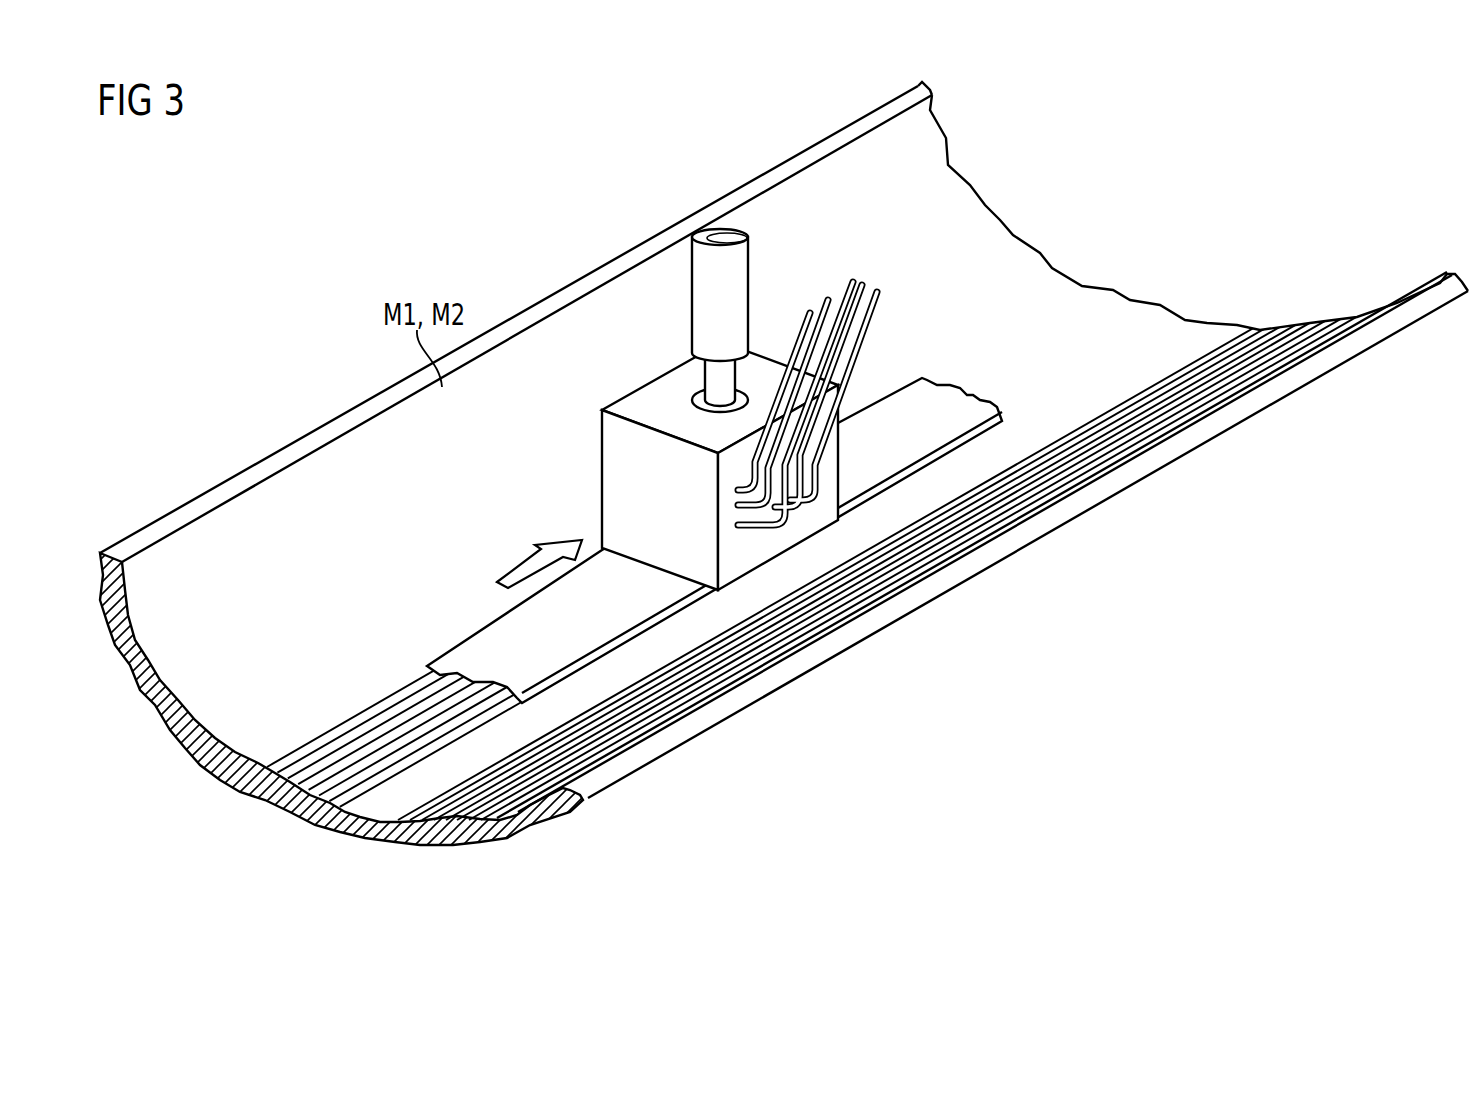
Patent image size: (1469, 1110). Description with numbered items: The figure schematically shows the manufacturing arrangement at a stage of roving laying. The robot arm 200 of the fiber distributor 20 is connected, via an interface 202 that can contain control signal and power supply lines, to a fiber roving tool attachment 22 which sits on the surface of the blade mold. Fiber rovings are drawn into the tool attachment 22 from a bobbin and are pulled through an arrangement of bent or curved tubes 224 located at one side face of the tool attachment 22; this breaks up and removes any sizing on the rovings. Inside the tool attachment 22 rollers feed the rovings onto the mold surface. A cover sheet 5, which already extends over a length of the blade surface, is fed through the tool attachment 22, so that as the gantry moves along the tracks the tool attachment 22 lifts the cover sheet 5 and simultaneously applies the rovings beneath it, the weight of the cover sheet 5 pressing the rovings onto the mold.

The cover sheet 5 is at (960, 400).
The fiber distributor 20 is at (769, 398).
The fiber roving tool attachment 22 is at (640, 400).
The robot arm 200 is at (738, 272).
The interface 202 is at (697, 393).
The curved tube 224 is at (742, 520).